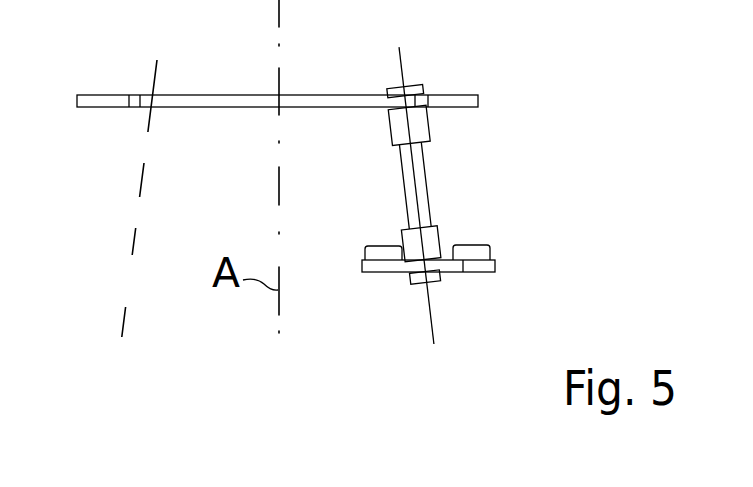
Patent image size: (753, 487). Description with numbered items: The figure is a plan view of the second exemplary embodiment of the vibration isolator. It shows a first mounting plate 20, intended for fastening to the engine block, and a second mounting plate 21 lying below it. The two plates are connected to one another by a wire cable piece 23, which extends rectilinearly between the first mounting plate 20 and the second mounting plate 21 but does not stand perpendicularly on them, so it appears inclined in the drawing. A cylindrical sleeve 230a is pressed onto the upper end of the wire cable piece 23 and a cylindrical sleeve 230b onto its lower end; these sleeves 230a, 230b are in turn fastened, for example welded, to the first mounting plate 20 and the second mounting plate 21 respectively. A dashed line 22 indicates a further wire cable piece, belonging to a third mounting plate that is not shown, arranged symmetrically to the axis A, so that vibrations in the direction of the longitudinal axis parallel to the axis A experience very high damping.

The first mounting plate 20 is at (321, 96).
The second mounting plate 21 is at (453, 265).
The dashed line 22 is at (122, 319).
The wire cable piece 23 is at (458, 175).
The cylindrical sleeve 230a is at (417, 121).
The cylindrical sleeve 230b is at (440, 240).